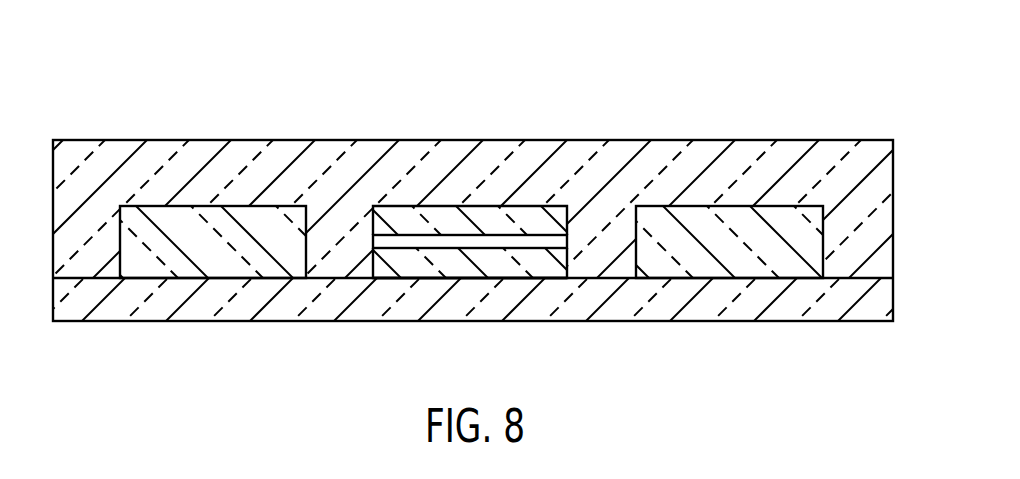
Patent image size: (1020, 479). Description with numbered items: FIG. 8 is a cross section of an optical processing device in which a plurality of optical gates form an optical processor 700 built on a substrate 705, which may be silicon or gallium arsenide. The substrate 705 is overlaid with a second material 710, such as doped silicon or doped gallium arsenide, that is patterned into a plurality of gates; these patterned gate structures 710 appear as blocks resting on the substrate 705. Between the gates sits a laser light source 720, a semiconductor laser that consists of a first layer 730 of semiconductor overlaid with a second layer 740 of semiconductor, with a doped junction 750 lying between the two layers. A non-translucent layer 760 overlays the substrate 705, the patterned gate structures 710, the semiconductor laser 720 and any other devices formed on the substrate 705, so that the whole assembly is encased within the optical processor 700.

The optical processor 700 is at (498, 207).
The substrate 705 is at (198, 312).
The second material 710 is at (268, 268).
The laser light source 720 is at (424, 294).
The first layer 730 is at (467, 268).
The second layer 740 is at (523, 212).
The doped junction 750 is at (528, 246).
The non-translucent layer 760 is at (281, 140).